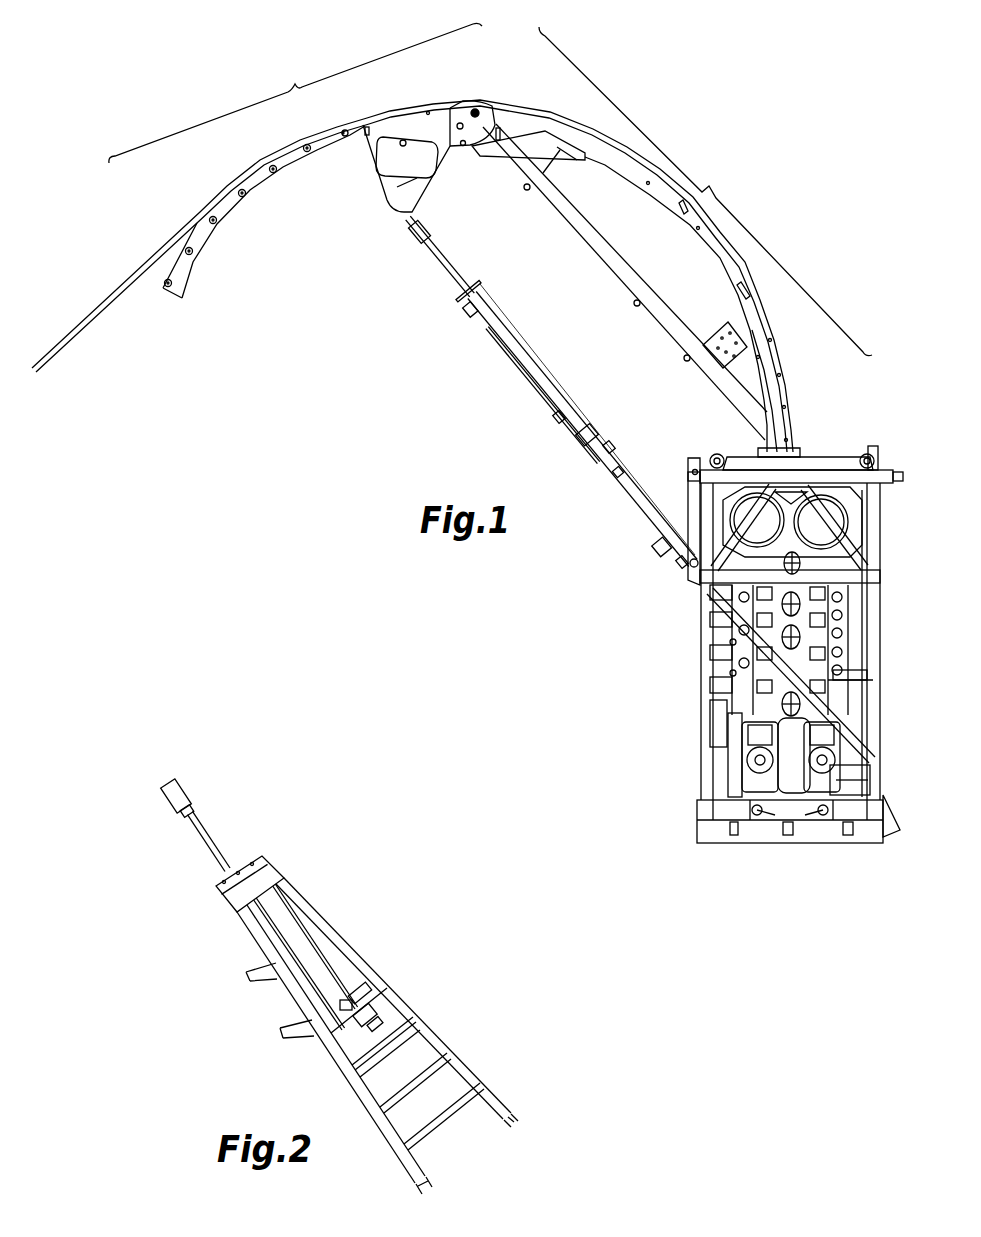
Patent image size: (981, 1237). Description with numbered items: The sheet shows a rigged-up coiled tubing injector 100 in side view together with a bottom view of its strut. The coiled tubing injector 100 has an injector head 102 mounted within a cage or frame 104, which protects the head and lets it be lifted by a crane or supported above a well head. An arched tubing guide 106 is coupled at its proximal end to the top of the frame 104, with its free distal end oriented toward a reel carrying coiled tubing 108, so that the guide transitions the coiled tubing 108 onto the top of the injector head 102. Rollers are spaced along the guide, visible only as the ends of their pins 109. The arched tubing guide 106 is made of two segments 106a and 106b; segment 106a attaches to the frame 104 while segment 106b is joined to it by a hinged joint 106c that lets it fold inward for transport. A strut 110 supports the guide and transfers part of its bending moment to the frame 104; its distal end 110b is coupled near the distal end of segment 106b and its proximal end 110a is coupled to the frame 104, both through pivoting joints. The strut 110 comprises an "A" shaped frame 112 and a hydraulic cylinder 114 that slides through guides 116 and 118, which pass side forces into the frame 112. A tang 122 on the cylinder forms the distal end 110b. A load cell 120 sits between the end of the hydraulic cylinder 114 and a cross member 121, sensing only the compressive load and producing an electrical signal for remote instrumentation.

In FIG. 1, the coiled tubing injector 100 is at (394, 460).
In FIG. 1, the injector head 102 is at (762, 703).
In FIG. 1, the frame 104 is at (700, 613).
In FIG. 1, the arched tubing guide 106 is at (452, 228).
In FIG. 1, the segment 106a is at (690, 22).
In FIG. 1, the segment 106b is at (295, 160).
In FIG. 1, the hinged joint 106c is at (503, 96).
In FIG. 1, the coiled tubing 108 is at (124, 283).
In FIG. 1, the pins 109 is at (308, 152).
In FIG. 1, the strut 110 is at (500, 404).
In FIG. 1, the proximal end 110a is at (675, 571).
In FIG. 2, the proximal end 110a is at (512, 1088).
In FIG. 1, the distal end 110b is at (387, 256).
In FIG. 2, the distal end 110b is at (200, 813).
In FIG. 1, the "A" shaped frame 112 is at (632, 493).
In FIG. 2, the "A" shaped frame 112 is at (462, 1059).
In FIG. 1, the hydraulic cylinder 114 is at (453, 262).
In FIG. 2, the hydraulic cylinder 114 is at (217, 843).
In FIG. 1, the guide 116 is at (470, 320).
In FIG. 2, the guide 116 is at (270, 877).
In FIG. 1, the guide 118 is at (596, 414).
In FIG. 2, the guide 118 is at (385, 990).
In FIG. 1, the load cell 120 is at (611, 441).
In FIG. 2, the load cell 120 is at (388, 1013).
In FIG. 2, the cross member 121 is at (345, 1062).
In FIG. 1, the tang 122 is at (418, 252).
In FIG. 2, the tang 122 is at (172, 809).